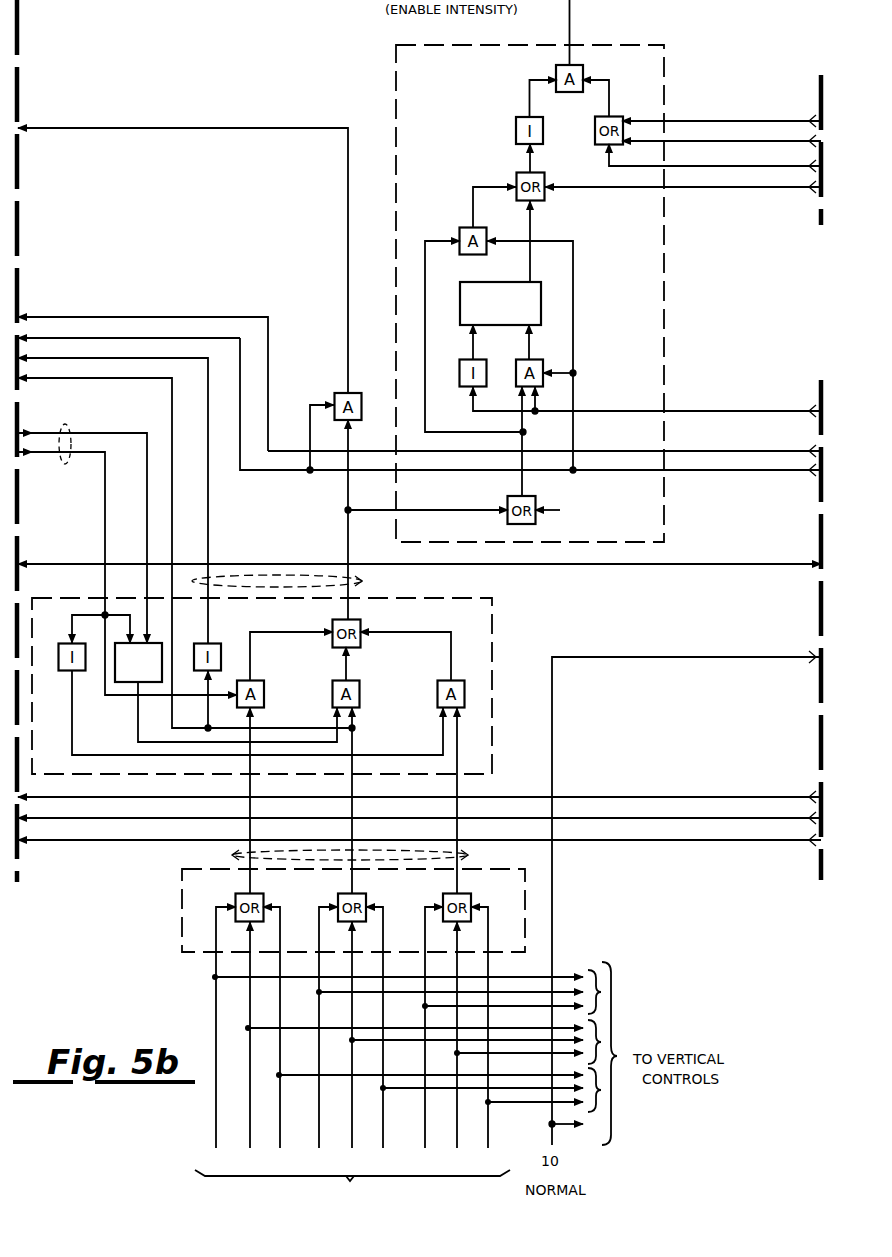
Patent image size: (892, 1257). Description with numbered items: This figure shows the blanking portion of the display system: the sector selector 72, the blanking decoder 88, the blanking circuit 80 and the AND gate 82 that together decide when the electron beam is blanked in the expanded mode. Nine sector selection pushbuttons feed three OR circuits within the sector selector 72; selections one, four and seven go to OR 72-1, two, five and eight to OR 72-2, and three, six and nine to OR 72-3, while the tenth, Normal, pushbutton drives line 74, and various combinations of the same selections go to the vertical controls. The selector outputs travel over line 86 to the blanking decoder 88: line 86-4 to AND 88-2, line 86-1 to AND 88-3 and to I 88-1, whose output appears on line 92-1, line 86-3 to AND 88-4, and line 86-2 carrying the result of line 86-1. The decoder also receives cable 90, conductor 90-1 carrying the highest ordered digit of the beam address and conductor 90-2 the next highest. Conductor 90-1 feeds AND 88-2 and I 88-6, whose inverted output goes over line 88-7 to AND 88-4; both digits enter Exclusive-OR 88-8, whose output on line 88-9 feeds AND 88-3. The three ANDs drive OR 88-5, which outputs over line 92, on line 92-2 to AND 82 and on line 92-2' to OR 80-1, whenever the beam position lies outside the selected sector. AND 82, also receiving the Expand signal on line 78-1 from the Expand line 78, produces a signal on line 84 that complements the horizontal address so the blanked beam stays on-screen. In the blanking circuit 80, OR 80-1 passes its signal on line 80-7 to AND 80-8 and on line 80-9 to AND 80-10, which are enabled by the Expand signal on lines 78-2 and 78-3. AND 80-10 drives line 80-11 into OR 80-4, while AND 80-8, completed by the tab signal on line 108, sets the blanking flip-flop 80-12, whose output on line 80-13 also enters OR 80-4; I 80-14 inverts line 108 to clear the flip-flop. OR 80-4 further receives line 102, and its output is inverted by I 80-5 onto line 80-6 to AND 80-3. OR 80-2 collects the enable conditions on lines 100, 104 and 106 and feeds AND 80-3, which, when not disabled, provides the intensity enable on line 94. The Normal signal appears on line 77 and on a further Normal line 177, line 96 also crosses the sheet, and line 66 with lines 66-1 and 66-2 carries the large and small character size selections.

The intensity enable line 94 is at (570, 14).
The blanking circuit 80 is at (396, 52).
The OR circuit 80-1 is at (537, 500).
The OR circuit 80-2 is at (609, 117).
The AND circuit 80-3 is at (582, 70).
The OR circuit 80-4 is at (537, 172).
The inverter 80-5 is at (516, 120).
The line 80-6 is at (528, 86).
The line 80-7 is at (522, 424).
The AND circuit 80-8 is at (542, 360).
The line 80-9 is at (425, 295).
The AND circuit 80-10 is at (468, 228).
The line 80-11 is at (473, 187).
The blanking flip-flop 80-12 is at (495, 282).
The line 80-13 is at (531, 222).
The inverter 80-14 is at (459, 373).
The Expand signal line 78 is at (143, 340).
The line 78-1 is at (322, 404).
The line 78-2 is at (555, 376).
The line 78-3 is at (573, 250).
The Normal signal line 77 is at (143, 320).
The normal line 177 is at (675, 453).
The line 100 is at (686, 121).
The line 102 is at (685, 187).
The line 104 is at (685, 166).
The line 106 is at (685, 142).
The line 108 is at (690, 413).
The AND gate 82 is at (363, 396).
The line 84 is at (58, 129).
The line 86 is at (366, 854).
The line 86-1 is at (352, 807).
The line 86-2 is at (140, 381).
The line 86-3 is at (457, 807).
The line 86-4 is at (250, 807).
The blanking decoder 88 is at (492, 609).
The inverter 88-1 is at (215, 643).
The AND circuit 88-2 is at (260, 682).
The AND circuit 88-3 is at (357, 682).
The AND circuit 88-4 is at (437, 696).
The OR circuit 88-5 is at (360, 626).
The inverter 88-6 is at (58, 650).
The line 88-7 is at (72, 752).
The Exclusive-OR circuit 88-8 is at (134, 686).
The line 88-9 is at (138, 730).
The cable 90 is at (66, 428).
The conductor 90-1 is at (92, 455).
The conductor 90-2 is at (92, 436).
The line 92 is at (297, 581).
The line 92-1 is at (140, 361).
The line 92-2 is at (393, 518).
The line 92-2' is at (444, 496).
The line 96 is at (50, 560).
The line 74 is at (708, 660).
The characters line 66 is at (645, 798).
The line 66-1 is at (638, 841).
The line 66-2 is at (638, 819).
The sector selector 72 is at (182, 882).
The OR circuit 72-1 is at (258, 893).
The OR circuit 72-2 is at (364, 893).
The OR circuit 72-3 is at (464, 893).